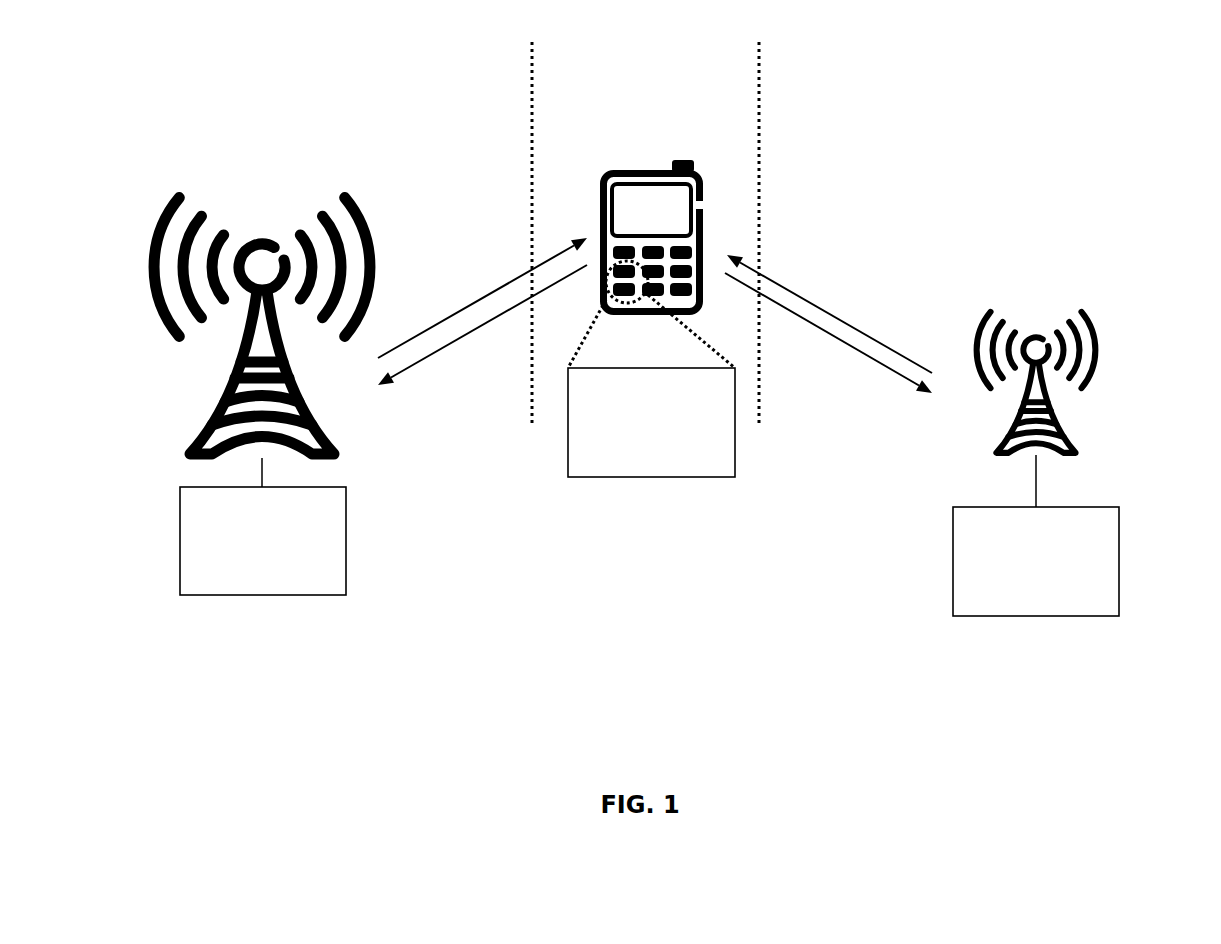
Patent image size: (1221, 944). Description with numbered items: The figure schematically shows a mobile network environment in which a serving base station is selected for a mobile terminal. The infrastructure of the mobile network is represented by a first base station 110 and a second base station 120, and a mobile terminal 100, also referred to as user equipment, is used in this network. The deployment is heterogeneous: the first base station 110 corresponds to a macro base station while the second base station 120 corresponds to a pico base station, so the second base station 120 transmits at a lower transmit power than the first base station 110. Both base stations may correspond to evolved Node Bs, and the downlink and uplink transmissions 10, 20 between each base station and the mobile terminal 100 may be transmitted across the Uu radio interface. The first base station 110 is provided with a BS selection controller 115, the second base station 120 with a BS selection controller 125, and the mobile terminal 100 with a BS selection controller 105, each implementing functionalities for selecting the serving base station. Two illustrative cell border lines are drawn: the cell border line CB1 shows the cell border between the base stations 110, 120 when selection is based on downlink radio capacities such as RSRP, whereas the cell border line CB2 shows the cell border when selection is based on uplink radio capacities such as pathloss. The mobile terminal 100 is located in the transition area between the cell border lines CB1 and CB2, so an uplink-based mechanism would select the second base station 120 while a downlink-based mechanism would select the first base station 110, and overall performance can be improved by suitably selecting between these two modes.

The mobile terminal 100 is at (633, 170).
The BS selection controller 105 is at (650, 477).
The first base station 110 is at (182, 447).
The BS selection controller 115 is at (180, 560).
The second base station 120 is at (1077, 446).
The BS selection controller 125 is at (1119, 575).
The DL transmission 10 is at (475, 302).
The UL transmission 20 is at (458, 340).
The cell border line CB1 is at (757, 73).
The cell border line CB2 is at (530, 73).